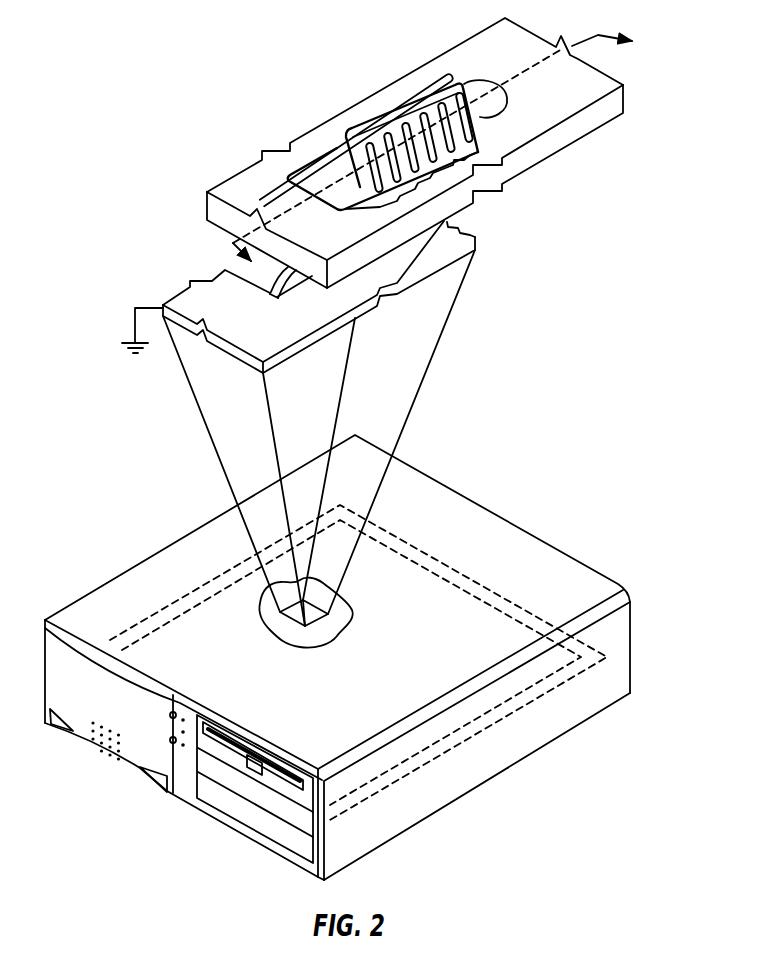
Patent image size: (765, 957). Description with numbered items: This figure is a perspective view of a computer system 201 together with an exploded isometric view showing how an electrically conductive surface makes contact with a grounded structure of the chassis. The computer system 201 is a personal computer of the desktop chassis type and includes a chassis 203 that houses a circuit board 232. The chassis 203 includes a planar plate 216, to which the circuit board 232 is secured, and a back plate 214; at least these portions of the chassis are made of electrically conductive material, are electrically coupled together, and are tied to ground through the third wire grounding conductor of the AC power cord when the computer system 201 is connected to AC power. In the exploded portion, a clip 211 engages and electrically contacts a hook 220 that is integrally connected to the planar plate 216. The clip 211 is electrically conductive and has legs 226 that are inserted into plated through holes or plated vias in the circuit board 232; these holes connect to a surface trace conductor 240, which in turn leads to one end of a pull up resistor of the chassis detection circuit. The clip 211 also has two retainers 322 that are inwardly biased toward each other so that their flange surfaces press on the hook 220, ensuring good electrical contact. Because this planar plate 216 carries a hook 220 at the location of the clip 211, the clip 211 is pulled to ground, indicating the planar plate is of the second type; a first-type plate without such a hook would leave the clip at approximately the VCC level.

The computer system 201 is at (549, 480).
The chassis 203 is at (620, 673).
The clip 211 is at (481, 86).
The back plate 214 is at (553, 545).
The planar plate 216 is at (292, 338).
The hook 220 is at (353, 132).
The legs 226 is at (453, 163).
The circuit board 232 is at (537, 103).
The surface trace conductor 240 is at (265, 200).
The retainers 322 is at (480, 138).